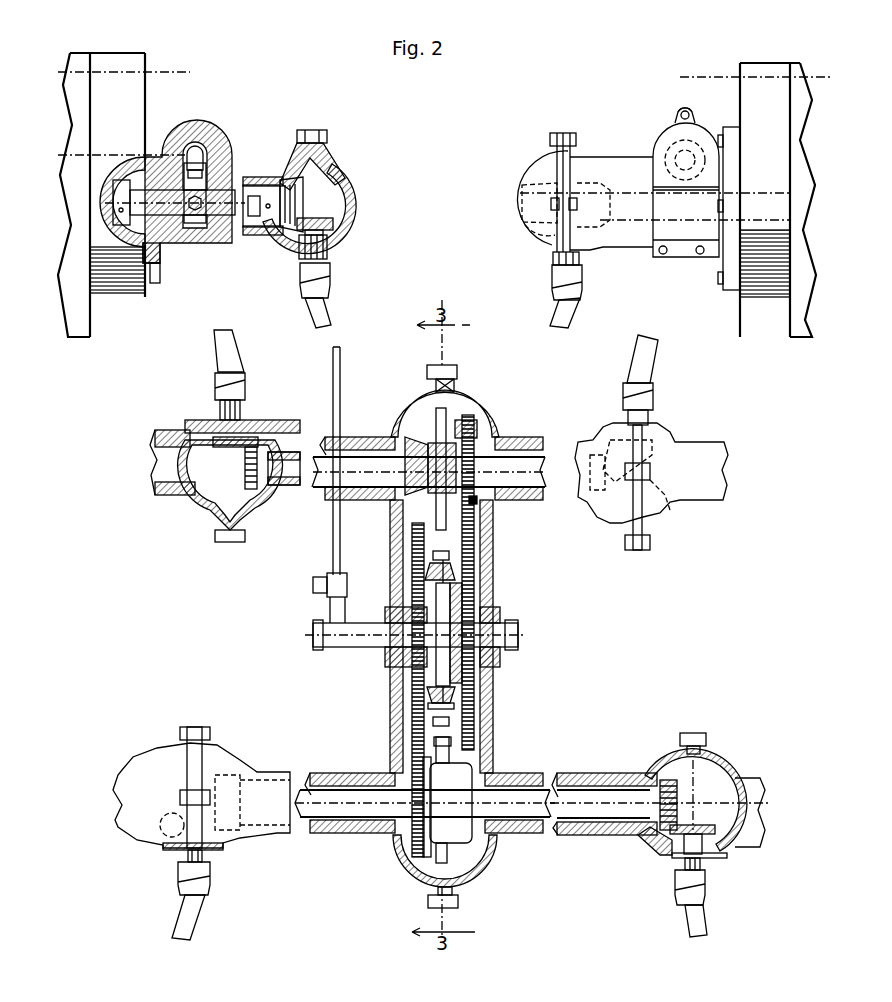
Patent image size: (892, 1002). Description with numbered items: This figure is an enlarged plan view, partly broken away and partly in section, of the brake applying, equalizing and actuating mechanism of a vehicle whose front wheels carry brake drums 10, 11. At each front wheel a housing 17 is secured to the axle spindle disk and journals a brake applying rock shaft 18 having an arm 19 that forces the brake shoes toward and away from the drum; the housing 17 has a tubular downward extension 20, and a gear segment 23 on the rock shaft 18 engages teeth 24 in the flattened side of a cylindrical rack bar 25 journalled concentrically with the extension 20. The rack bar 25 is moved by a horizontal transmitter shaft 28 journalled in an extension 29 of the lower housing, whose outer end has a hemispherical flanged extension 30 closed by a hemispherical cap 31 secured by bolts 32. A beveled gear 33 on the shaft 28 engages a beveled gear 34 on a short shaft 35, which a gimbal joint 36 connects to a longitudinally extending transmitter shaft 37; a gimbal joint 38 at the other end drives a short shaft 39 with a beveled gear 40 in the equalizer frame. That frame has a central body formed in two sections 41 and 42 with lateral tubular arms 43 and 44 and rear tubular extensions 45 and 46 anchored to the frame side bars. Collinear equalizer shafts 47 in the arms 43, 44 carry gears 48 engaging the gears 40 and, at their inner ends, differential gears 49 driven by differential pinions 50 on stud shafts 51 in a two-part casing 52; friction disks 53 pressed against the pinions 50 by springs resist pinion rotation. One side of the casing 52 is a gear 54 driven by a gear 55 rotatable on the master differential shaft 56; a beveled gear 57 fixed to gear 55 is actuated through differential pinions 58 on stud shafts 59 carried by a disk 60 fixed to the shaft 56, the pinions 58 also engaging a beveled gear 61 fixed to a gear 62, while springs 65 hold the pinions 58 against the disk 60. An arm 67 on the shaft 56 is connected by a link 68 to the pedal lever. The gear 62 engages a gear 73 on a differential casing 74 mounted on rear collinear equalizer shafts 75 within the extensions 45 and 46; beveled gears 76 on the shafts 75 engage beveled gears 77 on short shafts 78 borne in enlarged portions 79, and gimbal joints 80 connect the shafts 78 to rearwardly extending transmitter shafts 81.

The brake drum 10 is at (752, 104).
The brake drum 11 is at (136, 66).
The housing 17 is at (203, 140).
The brake applying rock shaft 18 is at (176, 207).
The arm 19 is at (158, 243).
The tubular downward extension 20 is at (664, 128).
The gear segment 23 is at (214, 170).
The teeth 24 is at (213, 152).
The cylindrical rack bar 25 is at (196, 140).
The horizontal transmitter shaft 28 is at (255, 232).
The extension 29 is at (259, 175).
The hemispherical flanged extension 30 is at (284, 168).
The hemispherical cap 31 is at (345, 175).
The bolts 32 is at (323, 136).
The beveled gear 33 is at (300, 188).
The beveled gear 34 is at (327, 228).
The short shaft 35 is at (327, 259).
The universal or gimbal joint 36 is at (321, 280).
The longitudinally extending transmitter shaft 37 is at (245, 338).
The gimbal joint 38 is at (240, 384).
The short shaft 39 is at (222, 420).
The beveled gear 40 is at (207, 452).
The section of central body portion 41 is at (474, 404).
The section of central body portion 42 is at (428, 392).
The tubular arm 43 is at (533, 443).
The tubular arm 44 is at (360, 436).
The tubular extension 45 is at (520, 780).
The tubular extension 46 is at (352, 775).
The equalizer shafts 47 is at (540, 488).
The gears 48 is at (247, 478).
The differential gears 49 is at (478, 500).
The differential pinions 50 is at (427, 463).
The stud shafts 51 is at (463, 416).
The two-part casing 52 is at (420, 443).
The friction disks 53 is at (432, 438).
The gear 54 is at (478, 428).
The gear 55 is at (451, 572).
The shaft of master differential 56 is at (507, 627).
The beveled gear 57 is at (477, 673).
The differential pinions 58 is at (456, 575).
The stud shafts 59 is at (433, 555).
The disk 60 is at (390, 670).
The beveled gear 61 is at (415, 685).
The gear 62 is at (413, 572).
The springs 65 is at (430, 710).
The arm 67 is at (330, 609).
The link 68 is at (333, 521).
The gear 73 is at (417, 837).
The differential casing 74 is at (467, 837).
The collinear equalizer shafts 75 is at (333, 805).
The beveled gears 76 is at (225, 763).
The beveled gears 77 is at (173, 830).
The short shafts 78 is at (200, 857).
The enlarged portions 79 is at (147, 825).
The universal or gimbal joints 80 is at (202, 888).
The transmitter shafts 81 is at (194, 908).